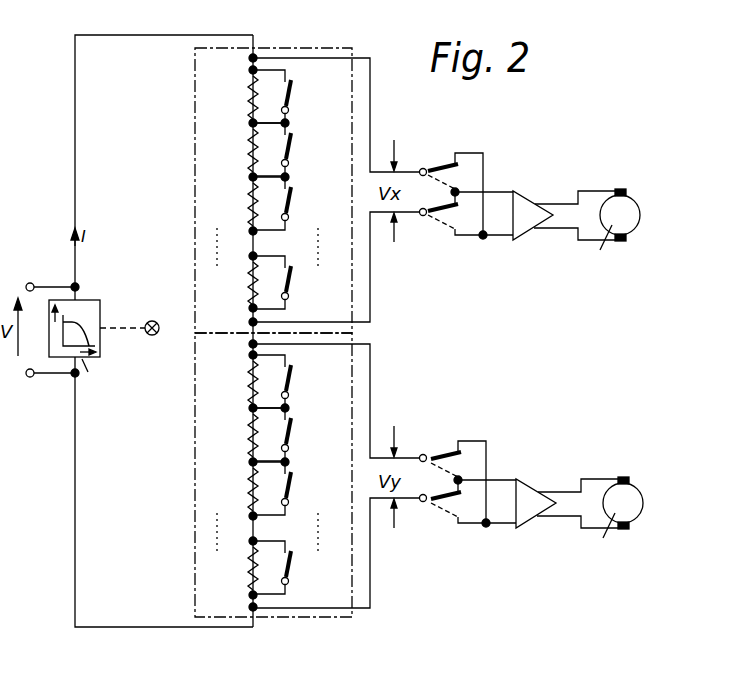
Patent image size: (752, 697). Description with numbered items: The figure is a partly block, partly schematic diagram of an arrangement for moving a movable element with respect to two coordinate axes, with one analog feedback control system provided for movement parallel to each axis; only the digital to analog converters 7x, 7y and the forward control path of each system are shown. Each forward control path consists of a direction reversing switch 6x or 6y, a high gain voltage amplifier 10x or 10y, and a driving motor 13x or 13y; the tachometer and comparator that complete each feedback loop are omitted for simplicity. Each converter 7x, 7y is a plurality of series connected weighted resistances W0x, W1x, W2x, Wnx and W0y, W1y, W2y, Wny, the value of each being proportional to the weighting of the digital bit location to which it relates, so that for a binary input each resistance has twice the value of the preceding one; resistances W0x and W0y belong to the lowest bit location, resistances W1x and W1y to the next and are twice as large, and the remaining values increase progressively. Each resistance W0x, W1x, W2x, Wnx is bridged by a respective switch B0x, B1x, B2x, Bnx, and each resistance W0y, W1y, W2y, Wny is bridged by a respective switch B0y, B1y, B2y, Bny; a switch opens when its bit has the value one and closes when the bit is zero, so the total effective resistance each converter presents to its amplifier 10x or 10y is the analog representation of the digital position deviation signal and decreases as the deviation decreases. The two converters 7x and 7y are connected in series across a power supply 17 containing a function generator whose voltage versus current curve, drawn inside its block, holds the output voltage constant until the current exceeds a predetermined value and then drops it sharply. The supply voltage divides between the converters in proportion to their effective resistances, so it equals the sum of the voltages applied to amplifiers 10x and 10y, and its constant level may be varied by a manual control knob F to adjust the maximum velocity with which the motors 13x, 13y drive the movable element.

The power supply 17 is at (93, 312).
The manual control knob F is at (155, 321).
The digital to analog converter 7x is at (273, 172).
The digital to analog converter 7y is at (273, 494).
The direction reversing switch 6x is at (434, 167).
The direction reversing switch 6y is at (467, 474).
The high gain voltage amplifier 10x is at (523, 199).
The high gain voltage amplifier 10y is at (537, 491).
The driving motor 13x is at (631, 197).
The driving motor 13y is at (590, 515).
The weighted resistance W0x is at (249, 97).
The weighted resistance W1x is at (249, 150).
The weighted resistance W2x is at (249, 204).
The weighted resistance Wnx is at (249, 283).
The switch B0x is at (290, 97).
The switch B1x is at (290, 150).
The switch B2x is at (290, 204).
The switch Bnx is at (290, 283).
The weighted resistance W0y is at (249, 382).
The weighted resistance W1y is at (249, 435).
The weighted resistance W2y is at (249, 489).
The weighted resistance Wny is at (249, 568).
The switch B0y is at (290, 382).
The switch B1y is at (290, 435).
The switch B2y is at (290, 489).
The switch Bny is at (290, 568).